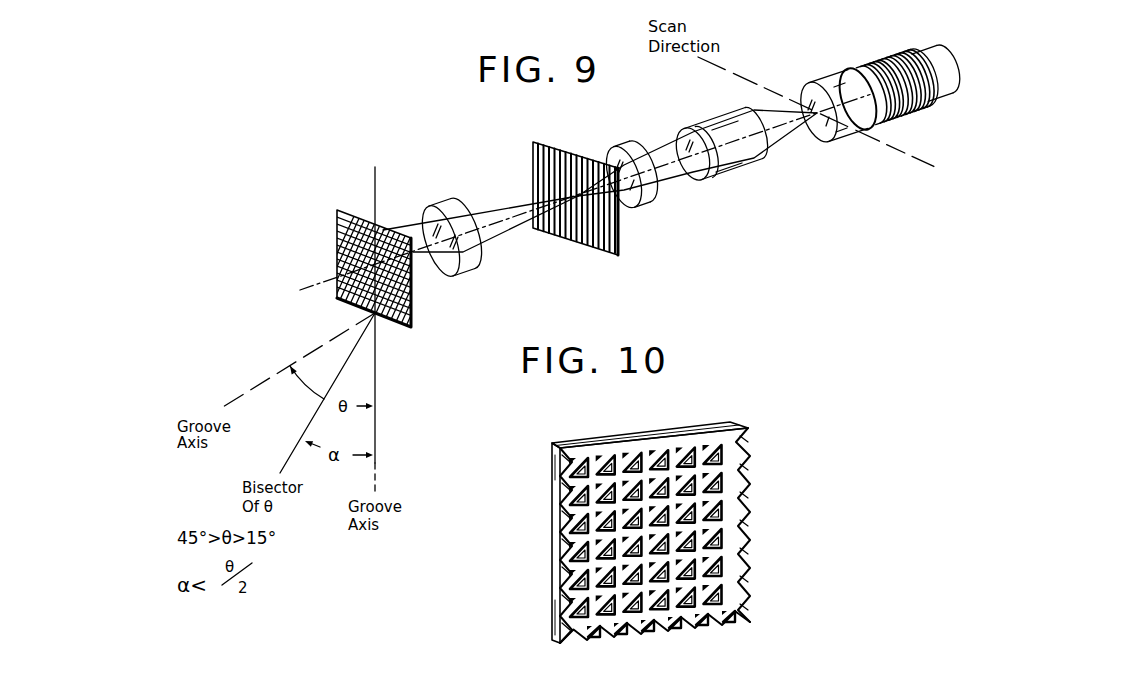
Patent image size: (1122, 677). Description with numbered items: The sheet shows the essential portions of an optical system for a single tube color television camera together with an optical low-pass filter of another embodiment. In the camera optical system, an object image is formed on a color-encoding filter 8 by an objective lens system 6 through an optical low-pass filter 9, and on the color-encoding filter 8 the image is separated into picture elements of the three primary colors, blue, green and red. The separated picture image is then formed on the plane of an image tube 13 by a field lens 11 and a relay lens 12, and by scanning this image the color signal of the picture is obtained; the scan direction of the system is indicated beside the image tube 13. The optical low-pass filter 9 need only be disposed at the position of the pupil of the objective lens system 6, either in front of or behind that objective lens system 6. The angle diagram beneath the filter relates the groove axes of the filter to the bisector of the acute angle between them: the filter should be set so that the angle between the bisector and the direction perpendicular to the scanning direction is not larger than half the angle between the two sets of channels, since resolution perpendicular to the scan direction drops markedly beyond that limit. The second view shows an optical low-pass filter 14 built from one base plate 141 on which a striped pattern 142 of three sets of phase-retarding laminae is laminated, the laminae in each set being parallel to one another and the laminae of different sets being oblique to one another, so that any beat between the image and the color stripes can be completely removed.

In FIG. 9, the objective lens system 6 is at (449, 207).
In FIG. 9, the color-encoding filter 8 is at (567, 151).
In FIG. 9, the optical low-pass filter 9 is at (368, 222).
In FIG. 9, the field lens 11 is at (628, 146).
In FIG. 9, the relay lens 12 is at (717, 117).
In FIG. 9, the image tube 13 is at (820, 82).
In FIG. 10, the optical low-pass filter 14 is at (702, 420).
In FIG. 10, the base plate 141 is at (618, 438).
In FIG. 10, the striped pattern 142 is at (739, 463).